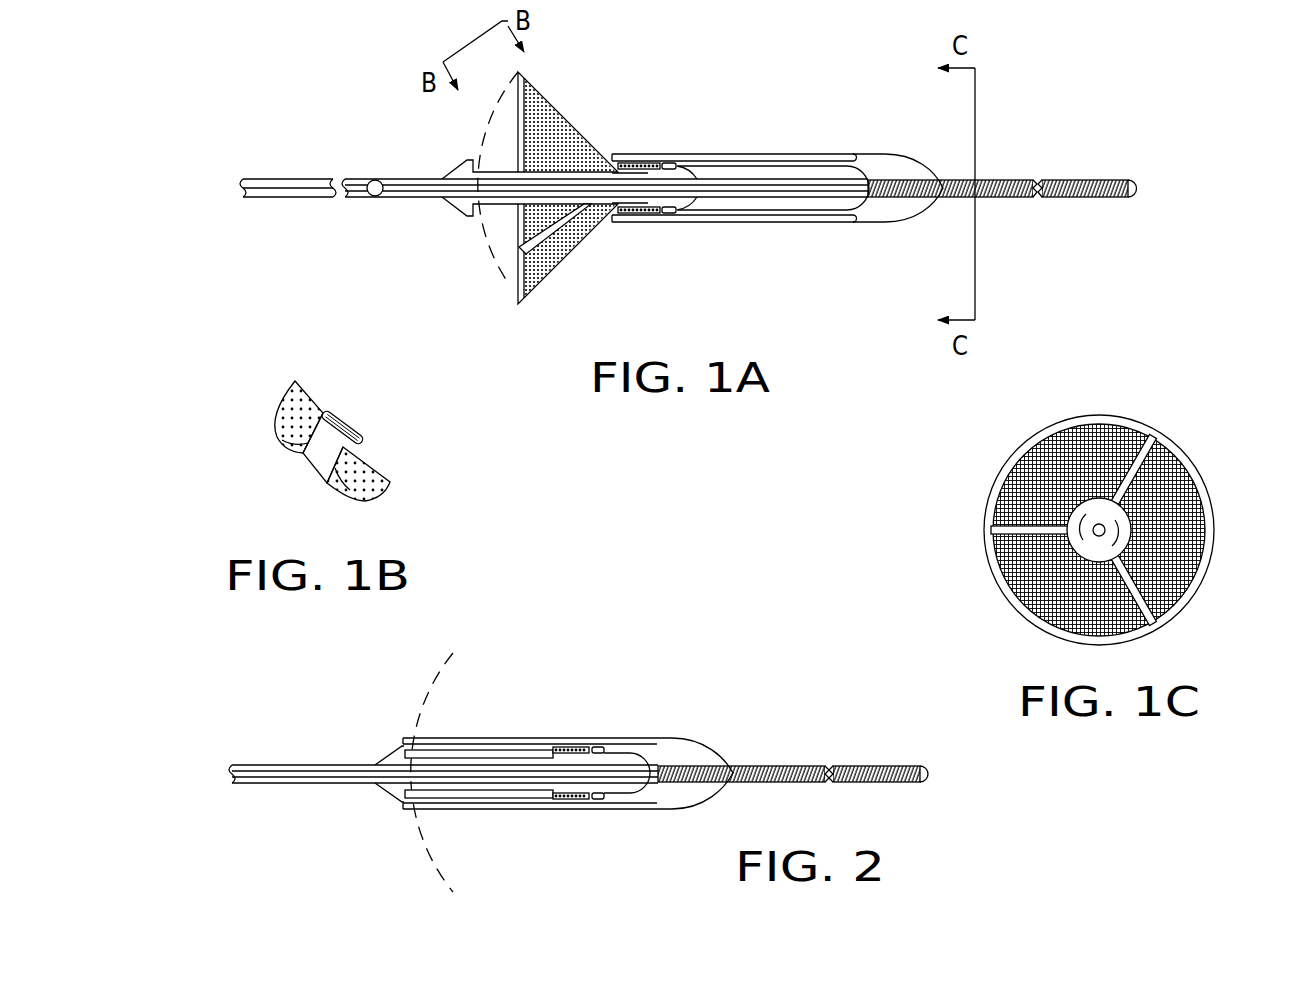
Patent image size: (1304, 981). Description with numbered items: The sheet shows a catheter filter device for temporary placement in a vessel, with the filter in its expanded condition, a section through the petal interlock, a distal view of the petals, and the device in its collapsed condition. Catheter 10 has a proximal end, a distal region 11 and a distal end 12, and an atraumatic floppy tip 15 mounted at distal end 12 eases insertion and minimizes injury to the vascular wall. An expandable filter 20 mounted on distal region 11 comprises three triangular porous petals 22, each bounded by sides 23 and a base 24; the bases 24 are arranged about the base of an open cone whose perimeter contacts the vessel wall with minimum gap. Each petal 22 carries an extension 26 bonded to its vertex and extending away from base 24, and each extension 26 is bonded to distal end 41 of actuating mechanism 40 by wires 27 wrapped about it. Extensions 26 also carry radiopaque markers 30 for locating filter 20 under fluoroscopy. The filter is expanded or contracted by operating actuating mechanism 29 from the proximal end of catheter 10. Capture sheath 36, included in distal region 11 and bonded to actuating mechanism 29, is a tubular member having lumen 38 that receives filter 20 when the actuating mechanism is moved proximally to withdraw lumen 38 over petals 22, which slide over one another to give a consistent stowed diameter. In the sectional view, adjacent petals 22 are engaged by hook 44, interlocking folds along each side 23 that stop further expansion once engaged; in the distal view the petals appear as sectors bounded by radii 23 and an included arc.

In FIG. 1A, the catheter 10 is at (384, 172).
In FIG. 1C, the catheter 10 is at (1103, 514).
In FIG. 2, the catheter 10 is at (265, 757).
In FIG. 1A, the distal region 11 is at (773, 180).
In FIG. 1A, the distal end 12 is at (1015, 181).
In FIG. 1A, the atraumatic floppy tip 15 is at (1105, 198).
In FIG. 2, the atraumatic floppy tip 15 is at (904, 765).
In FIG. 1A, the expandable filter 20 is at (575, 185).
In FIG. 1A, the triangular petals 22 is at (544, 264).
In FIG. 1C, the triangular petals 22 is at (1073, 446).
In FIG. 2, the triangular petals 22 is at (477, 757).
In FIG. 1A, the sides 23 is at (572, 228).
In FIG. 1B, the sides 23 is at (287, 442).
In FIG. 1C, the sides 23 is at (1148, 592).
In FIG. 1A, the base 24 is at (505, 283).
In FIG. 1A, the extension 26 is at (613, 154).
In FIG. 1A, the wires 27 is at (636, 163).
In FIG. 2, the wires 27 is at (572, 747).
In FIG. 1A, the actuating mechanism 29 is at (402, 198).
In FIG. 1A, the radiopaque markers 30 is at (670, 163).
In FIG. 1A, the capture sheath 36 is at (813, 153).
In FIG. 2, the capture sheath 36 is at (659, 737).
In FIG. 1A, the lumen 38 is at (808, 205).
In FIG. 2, the lumen 38 is at (632, 794).
In FIG. 1A, the actuating mechanism 40 is at (457, 172).
In FIG. 1C, the actuating mechanism 40 is at (1130, 509).
In FIG. 2, the actuating mechanism 40 is at (437, 789).
In FIG. 1A, the distal end of actuating mechanism 41 is at (688, 207).
In FIG. 1B, the hook 44 is at (356, 411).